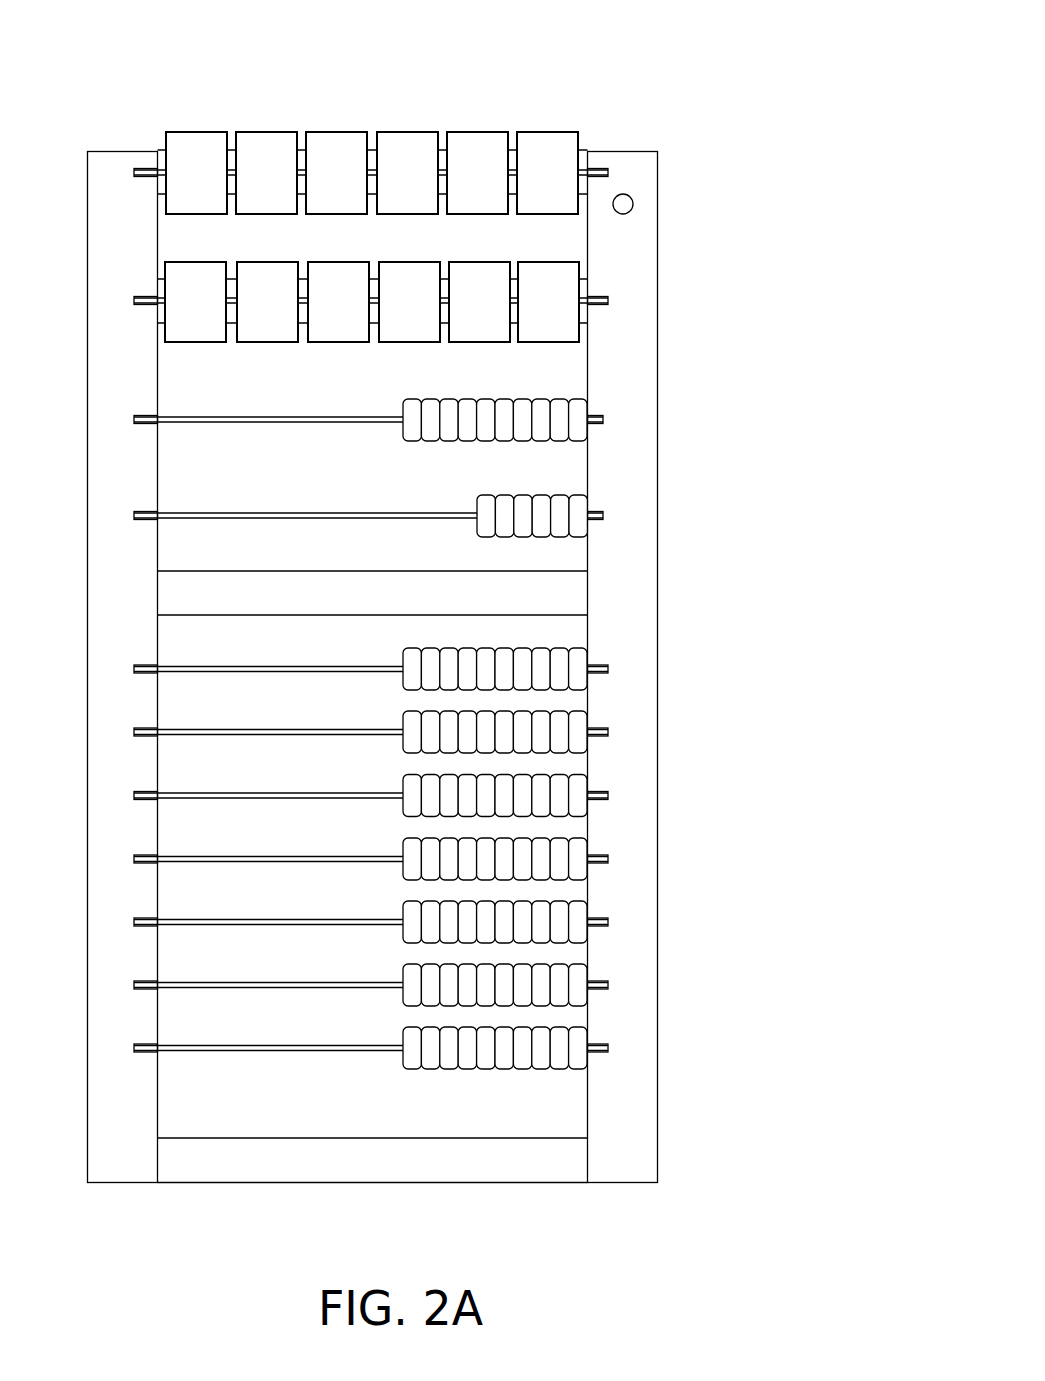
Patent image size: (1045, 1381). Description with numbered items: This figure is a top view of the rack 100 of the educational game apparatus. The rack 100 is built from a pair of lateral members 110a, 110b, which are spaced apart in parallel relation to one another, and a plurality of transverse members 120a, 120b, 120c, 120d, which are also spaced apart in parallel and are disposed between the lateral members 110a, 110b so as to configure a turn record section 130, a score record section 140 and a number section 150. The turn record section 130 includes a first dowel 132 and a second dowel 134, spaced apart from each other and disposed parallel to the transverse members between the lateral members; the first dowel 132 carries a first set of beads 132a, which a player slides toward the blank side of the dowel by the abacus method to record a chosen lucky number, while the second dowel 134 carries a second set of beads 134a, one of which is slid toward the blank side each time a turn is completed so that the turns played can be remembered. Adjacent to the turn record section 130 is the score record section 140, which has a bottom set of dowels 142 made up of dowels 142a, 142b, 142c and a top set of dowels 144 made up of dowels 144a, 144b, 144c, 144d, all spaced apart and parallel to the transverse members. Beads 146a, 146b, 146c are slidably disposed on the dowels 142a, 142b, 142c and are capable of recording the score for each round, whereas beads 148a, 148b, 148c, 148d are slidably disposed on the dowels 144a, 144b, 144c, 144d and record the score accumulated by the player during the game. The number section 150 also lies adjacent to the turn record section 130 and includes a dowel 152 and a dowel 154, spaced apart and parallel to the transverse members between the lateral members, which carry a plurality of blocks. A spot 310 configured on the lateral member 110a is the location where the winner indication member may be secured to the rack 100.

The rack 100 is at (660, 78).
The lateral member 110a is at (647, 585).
The lateral member 110b is at (100, 549).
The transverse member 120a is at (370, 1172).
The transverse member 120b is at (262, 610).
The transverse member 120c is at (424, 323).
The transverse member 120d is at (404, 180).
The turn record section 130 is at (449, 461).
The first dowel 132 is at (238, 517).
The first set of beads 132a is at (475, 522).
The second dowel 134 is at (192, 420).
The second set of beads 134a is at (400, 428).
The score record section 140 is at (417, 876).
The bottom set of dowels 142 is at (367, 999).
The dowel 142a is at (608, 1043).
The dowel 142b is at (608, 980).
The dowel 142c is at (608, 917).
The top set of dowels 144 is at (370, 759).
The dowel 144a is at (608, 854).
The dowel 144b is at (608, 790).
The dowel 144c is at (603, 728).
The dowel 144d is at (603, 665).
The bottom set of beads 146a is at (443, 1076).
The bottom set of beads 146b is at (392, 996).
The bottom set of beads 146c is at (392, 933).
The top set of beads 148a is at (392, 870).
The top set of beads 148b is at (392, 807).
The top set of beads 148c is at (392, 743).
The top set of beads 148d is at (392, 680).
The number section 150 is at (447, 245).
The dowel 152 is at (607, 300).
The dowel 154 is at (603, 168).
The spot 310 is at (629, 212).